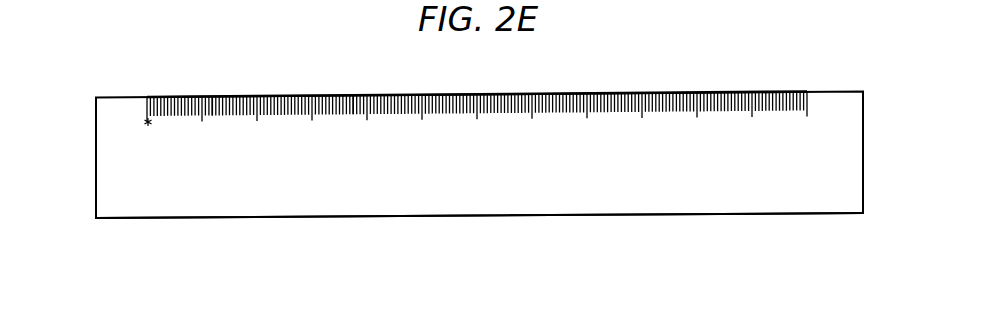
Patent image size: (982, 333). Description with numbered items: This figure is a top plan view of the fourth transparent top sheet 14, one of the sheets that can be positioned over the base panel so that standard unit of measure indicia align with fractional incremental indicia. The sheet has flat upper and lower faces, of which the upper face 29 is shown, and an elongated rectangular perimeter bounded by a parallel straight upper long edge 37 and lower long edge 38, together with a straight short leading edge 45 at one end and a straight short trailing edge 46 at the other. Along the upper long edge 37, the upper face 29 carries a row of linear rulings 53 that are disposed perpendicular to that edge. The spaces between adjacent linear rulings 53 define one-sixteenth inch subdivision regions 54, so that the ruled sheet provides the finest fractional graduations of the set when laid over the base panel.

The top sheet 14 is at (136, 193).
The upper face 29 is at (848, 193).
The upper long edge 37 is at (742, 91).
The lower long edge 38 is at (743, 214).
The leading edge 45 is at (96, 117).
The trailing edge 46 is at (864, 138).
The linear rulings 53 is at (213, 116).
The subdivision regions 54 is at (352, 113).